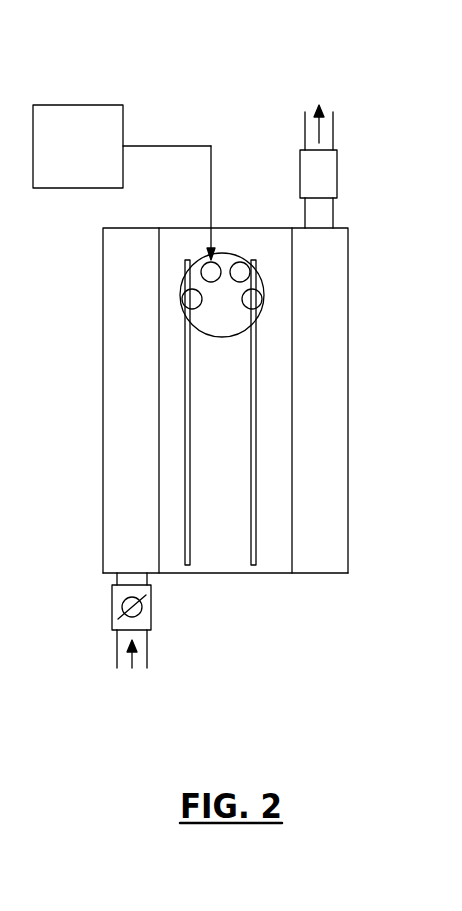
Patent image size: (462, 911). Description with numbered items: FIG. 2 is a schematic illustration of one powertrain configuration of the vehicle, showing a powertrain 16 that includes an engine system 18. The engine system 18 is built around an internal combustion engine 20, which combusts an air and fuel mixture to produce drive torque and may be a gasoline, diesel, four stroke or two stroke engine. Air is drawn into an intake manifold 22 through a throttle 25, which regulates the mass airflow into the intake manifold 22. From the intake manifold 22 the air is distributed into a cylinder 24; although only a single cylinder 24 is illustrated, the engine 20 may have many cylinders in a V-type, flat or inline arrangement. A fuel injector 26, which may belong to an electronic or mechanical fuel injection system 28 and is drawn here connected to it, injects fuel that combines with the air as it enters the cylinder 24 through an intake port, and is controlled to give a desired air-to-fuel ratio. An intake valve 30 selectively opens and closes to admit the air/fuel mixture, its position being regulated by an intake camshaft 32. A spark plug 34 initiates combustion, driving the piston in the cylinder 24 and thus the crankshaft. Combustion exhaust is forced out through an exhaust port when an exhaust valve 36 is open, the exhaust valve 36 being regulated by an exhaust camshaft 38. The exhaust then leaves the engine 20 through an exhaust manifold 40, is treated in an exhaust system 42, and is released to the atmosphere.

The powertrain 16 is at (228, 88).
The engine system 18 is at (380, 336).
The internal combustion engine 20 is at (223, 575).
The intake manifold 22 is at (103, 517).
The cylinder 24 is at (220, 203).
The throttle 25 is at (151, 607).
The fuel injector 26 is at (207, 263).
The fuel injection system 28 is at (122, 146).
The intake valve 30 is at (184, 308).
The intake camshaft 32 is at (187, 260).
The spark plug 34 is at (234, 263).
The exhaust valve 36 is at (258, 311).
The exhaust camshaft 38 is at (254, 261).
The exhaust manifold 40 is at (348, 288).
The exhaust system 42 is at (338, 173).